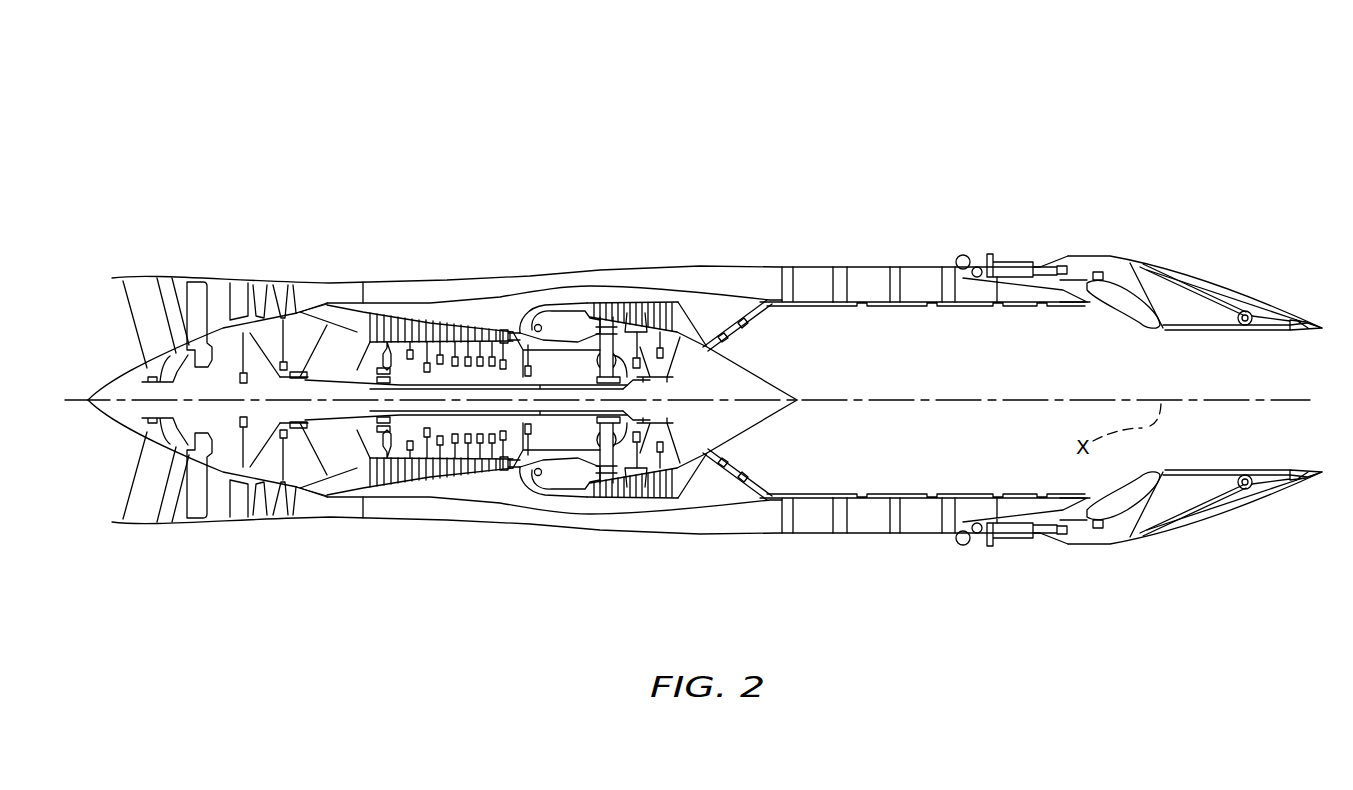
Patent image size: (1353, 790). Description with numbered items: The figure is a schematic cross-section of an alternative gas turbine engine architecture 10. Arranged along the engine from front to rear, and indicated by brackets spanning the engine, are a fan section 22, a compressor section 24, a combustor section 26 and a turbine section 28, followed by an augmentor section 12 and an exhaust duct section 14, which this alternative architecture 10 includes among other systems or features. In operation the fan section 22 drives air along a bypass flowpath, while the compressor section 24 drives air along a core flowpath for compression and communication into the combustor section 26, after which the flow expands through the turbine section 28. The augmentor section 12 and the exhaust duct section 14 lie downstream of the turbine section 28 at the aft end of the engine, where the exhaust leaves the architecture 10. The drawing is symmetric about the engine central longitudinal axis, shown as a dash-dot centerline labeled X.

The alternative engine architecture 10 is at (888, 121).
The fan section 22 is at (326, 193).
The compressor section 24 is at (539, 193).
The combustor section 26 is at (609, 193).
The turbine section 28 is at (686, 193).
The augmentor section 12 is at (814, 193).
The exhaust duct section 14 is at (1322, 208).